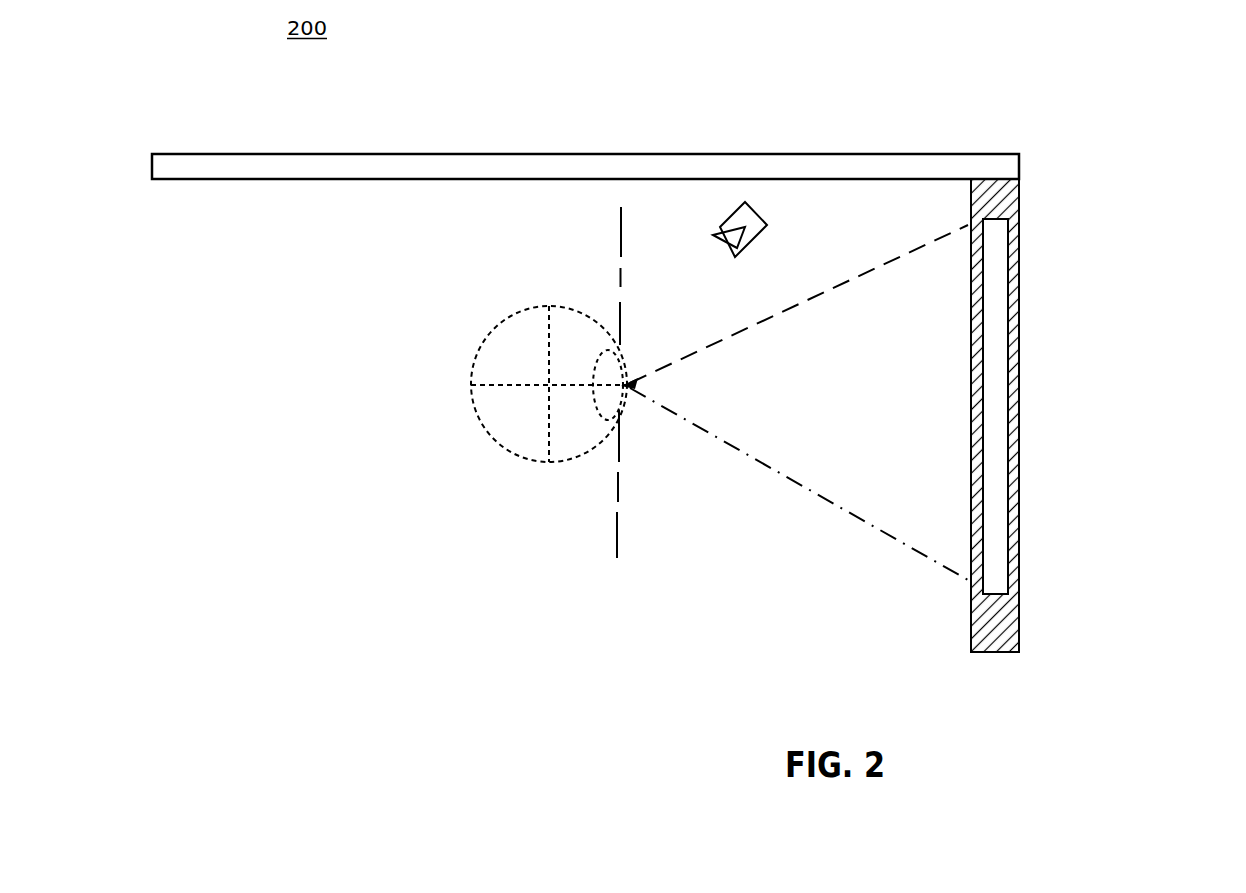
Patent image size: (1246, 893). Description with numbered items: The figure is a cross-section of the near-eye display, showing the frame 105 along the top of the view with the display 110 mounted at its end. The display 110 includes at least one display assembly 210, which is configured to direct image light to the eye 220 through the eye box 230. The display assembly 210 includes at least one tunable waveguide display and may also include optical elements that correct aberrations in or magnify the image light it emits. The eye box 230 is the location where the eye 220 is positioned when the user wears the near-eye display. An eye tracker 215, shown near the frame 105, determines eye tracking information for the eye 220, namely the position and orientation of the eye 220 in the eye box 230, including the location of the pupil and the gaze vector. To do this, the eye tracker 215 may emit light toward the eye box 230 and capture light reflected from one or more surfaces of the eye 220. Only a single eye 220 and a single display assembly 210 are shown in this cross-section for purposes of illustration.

The frame 105 is at (955, 153).
The display 110 is at (1020, 530).
The display assembly 210 is at (990, 295).
The eye tracker 215 is at (752, 205).
The eye 220 is at (513, 313).
The eye box 230 is at (618, 482).